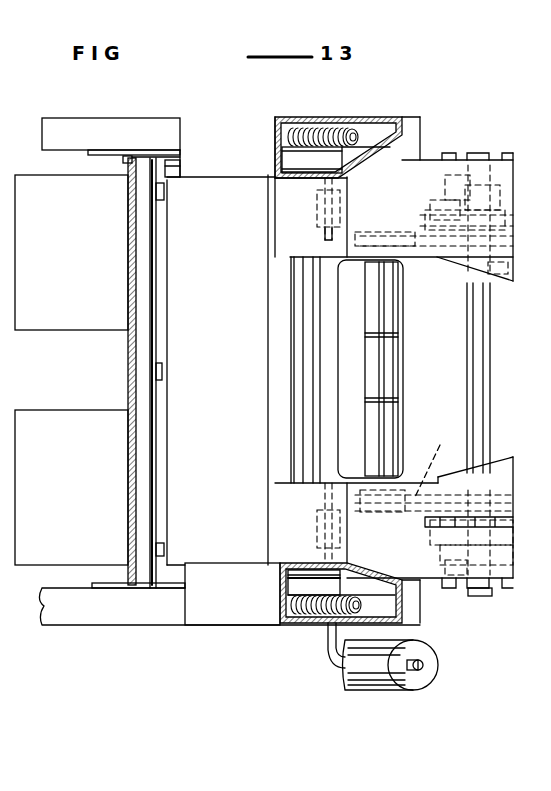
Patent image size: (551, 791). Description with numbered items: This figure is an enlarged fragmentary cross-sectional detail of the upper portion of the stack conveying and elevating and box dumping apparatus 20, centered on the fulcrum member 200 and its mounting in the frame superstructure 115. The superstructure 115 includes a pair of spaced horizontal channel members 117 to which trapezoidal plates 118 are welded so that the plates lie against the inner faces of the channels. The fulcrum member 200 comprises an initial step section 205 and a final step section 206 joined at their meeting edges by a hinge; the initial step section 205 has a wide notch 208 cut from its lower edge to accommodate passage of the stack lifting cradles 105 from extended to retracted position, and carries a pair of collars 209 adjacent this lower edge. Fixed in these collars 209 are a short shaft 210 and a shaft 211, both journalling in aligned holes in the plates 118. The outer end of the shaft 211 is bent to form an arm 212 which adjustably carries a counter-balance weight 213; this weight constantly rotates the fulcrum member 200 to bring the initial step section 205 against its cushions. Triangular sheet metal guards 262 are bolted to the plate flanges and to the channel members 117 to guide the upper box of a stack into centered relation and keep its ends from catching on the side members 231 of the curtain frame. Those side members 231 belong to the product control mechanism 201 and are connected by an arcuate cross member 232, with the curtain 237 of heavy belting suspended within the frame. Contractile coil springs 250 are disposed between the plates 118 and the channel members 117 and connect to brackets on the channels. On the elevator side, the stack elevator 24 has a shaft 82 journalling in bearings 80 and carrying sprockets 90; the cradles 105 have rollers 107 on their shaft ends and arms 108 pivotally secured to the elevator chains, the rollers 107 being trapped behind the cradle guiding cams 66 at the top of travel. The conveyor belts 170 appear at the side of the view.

The frame superstructure 115 is at (85, 123).
The horizontal channel members 117 is at (130, 108).
The trapezoidal plates 118 is at (140, 152).
The side members 231 is at (127, 163).
The arcuate cross member 232 is at (144, 249).
The curtain 237 is at (158, 295).
The conveyor belts 170 is at (67, 302).
The triangular sheet metal guards 262 is at (248, 172).
The initial step section 205 is at (217, 549).
The final step section 206 is at (217, 476).
The fulcrum member 200 is at (207, 352).
The product control mechanism 201 is at (142, 395).
The notch 208 is at (290, 450).
The stack conveying and elevating and box dumping apparatus 20 is at (222, 629).
The contractile coil springs 250 is at (345, 128).
The stack elevator 24 is at (482, 158).
The collars 209 is at (342, 200).
The short shaft 210 is at (328, 233).
The rollers 107 is at (345, 491).
The stack lifting cradles 105 is at (372, 309).
The shaft 82 is at (478, 400).
The cradle guiding cams 66 is at (429, 459).
The arms 108 is at (412, 513).
The sprockets 90 is at (452, 537).
The bearings 80 is at (446, 558).
The shaft 211 is at (330, 660).
The counter-balance weight 213 is at (378, 691).
The arm 212 is at (420, 670).